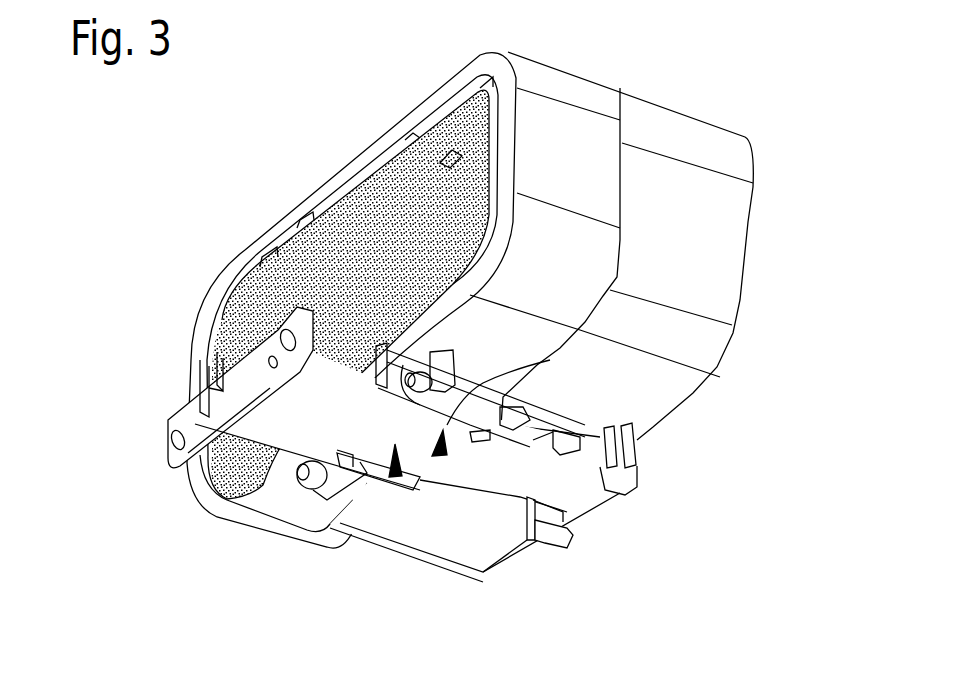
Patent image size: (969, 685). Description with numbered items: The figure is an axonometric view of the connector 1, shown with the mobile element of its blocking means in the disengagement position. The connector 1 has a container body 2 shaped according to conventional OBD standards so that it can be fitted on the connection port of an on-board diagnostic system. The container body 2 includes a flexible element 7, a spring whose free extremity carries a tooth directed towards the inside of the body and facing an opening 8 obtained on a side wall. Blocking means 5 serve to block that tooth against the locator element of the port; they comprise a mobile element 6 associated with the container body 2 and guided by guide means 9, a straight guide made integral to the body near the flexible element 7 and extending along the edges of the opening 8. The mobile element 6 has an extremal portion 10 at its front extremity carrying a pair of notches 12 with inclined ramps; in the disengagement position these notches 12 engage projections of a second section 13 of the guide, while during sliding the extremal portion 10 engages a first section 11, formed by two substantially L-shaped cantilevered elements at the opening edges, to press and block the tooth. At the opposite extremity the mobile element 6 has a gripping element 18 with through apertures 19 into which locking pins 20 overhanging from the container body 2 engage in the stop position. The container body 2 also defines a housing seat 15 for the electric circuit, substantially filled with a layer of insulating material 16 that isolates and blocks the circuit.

The connector 1 is at (750, 60).
The container body 2 is at (720, 212).
The blocking means 5 is at (395, 477).
The mobile element 6 is at (318, 400).
The flexible element 7 is at (520, 466).
The opening 8 is at (533, 440).
The guide means 9 is at (437, 456).
The extremal portion 10 is at (487, 462).
The first section 11 is at (645, 483).
The notches 12 is at (560, 410).
The second section 13 is at (550, 360).
The housing seat 15 is at (387, 157).
The insulating material 16 is at (452, 156).
The gripping element 18 is at (200, 413).
The through apertures 19 is at (286, 336).
The locking pins 20 is at (432, 353).